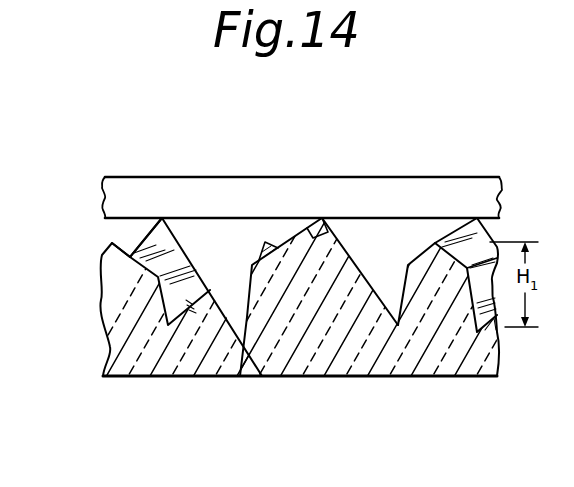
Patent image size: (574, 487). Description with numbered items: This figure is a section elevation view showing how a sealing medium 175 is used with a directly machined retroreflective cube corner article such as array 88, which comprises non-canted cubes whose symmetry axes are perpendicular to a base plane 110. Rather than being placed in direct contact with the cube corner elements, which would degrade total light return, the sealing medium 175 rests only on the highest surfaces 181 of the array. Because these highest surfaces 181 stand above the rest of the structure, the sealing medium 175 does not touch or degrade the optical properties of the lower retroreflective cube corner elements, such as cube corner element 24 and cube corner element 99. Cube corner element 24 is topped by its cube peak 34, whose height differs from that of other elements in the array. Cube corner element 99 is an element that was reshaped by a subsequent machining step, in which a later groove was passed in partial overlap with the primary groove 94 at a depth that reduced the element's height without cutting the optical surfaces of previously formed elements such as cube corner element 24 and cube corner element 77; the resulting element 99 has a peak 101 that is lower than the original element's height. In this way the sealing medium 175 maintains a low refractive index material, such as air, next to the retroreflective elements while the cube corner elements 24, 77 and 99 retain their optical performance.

The sealing medium 175 is at (203, 190).
The cube corner element 77 is at (315, 267).
The cube peak 34 is at (216, 294).
The highest surfaces 181 is at (323, 218).
The peak 101 is at (430, 244).
The cube corner element 99 is at (434, 247).
The array 88 is at (100, 302).
The base plane 110 is at (160, 377).
The cube corner element 24 is at (207, 311).
The primary groove 94 is at (242, 324).